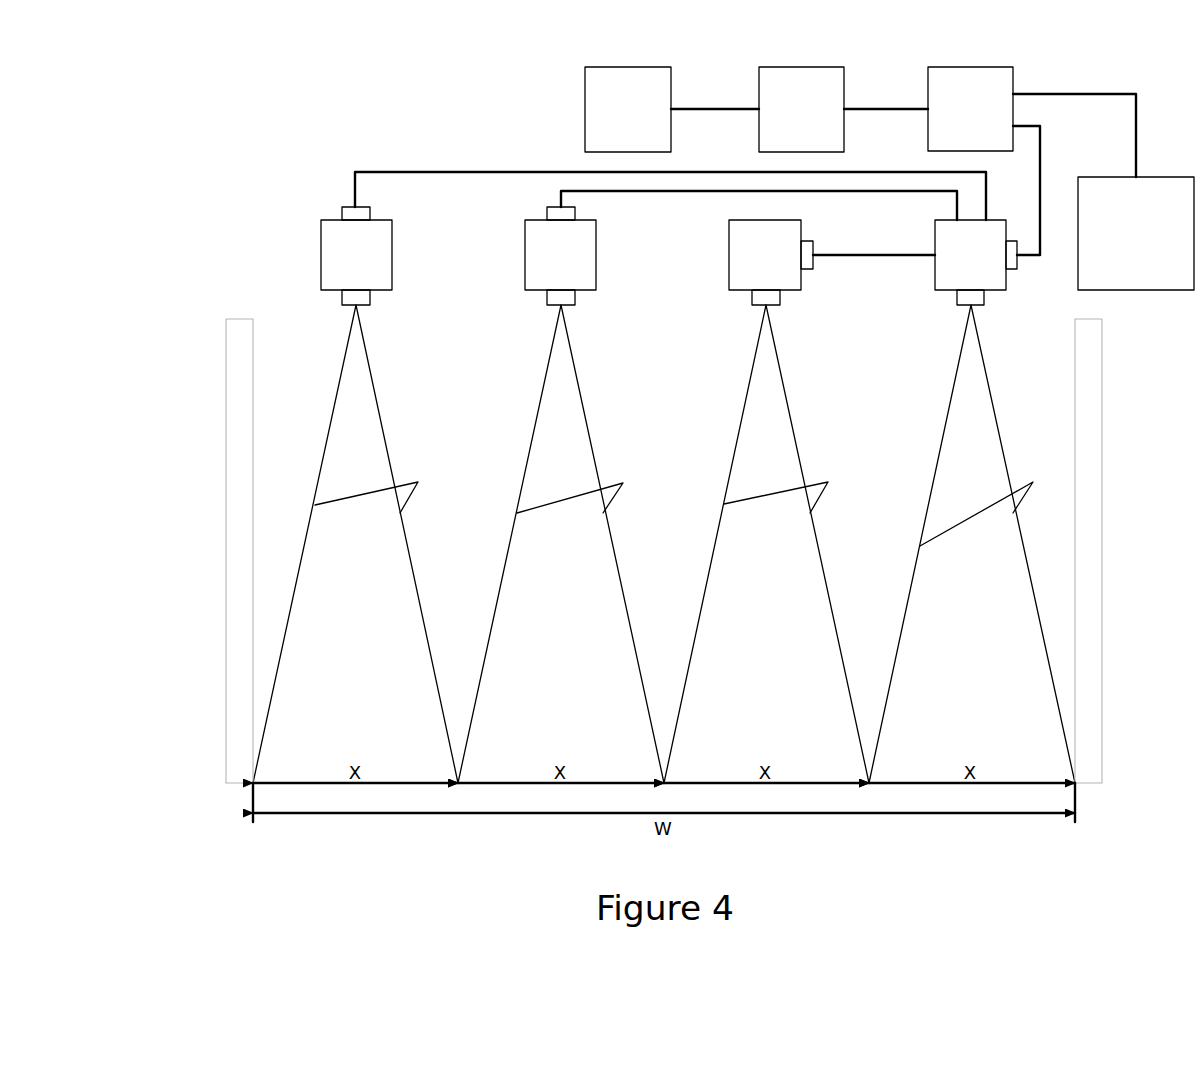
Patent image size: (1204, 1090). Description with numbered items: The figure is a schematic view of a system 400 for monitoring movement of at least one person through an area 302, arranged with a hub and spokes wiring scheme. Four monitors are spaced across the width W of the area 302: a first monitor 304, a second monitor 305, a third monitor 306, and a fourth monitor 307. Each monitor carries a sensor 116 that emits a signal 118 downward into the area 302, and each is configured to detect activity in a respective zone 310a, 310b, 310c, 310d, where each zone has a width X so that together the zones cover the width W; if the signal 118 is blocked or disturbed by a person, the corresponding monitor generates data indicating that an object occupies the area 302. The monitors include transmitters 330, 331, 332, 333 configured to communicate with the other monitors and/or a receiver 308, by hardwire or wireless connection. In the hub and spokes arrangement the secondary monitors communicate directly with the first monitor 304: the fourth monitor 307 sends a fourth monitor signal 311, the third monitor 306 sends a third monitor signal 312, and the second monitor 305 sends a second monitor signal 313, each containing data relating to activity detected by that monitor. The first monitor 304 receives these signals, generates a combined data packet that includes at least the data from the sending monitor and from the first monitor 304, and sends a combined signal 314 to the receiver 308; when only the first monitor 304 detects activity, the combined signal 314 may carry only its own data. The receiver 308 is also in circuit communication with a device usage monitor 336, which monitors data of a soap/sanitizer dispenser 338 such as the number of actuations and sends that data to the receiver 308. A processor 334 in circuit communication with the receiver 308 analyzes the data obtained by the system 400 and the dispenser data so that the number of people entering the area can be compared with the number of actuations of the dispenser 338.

The system 400 is at (335, 108).
The soap/sanitizer dispenser 338 is at (637, 66).
The device usage monitor 336 is at (810, 66).
The receiver 308 is at (978, 66).
The processor 334 is at (1149, 290).
The combined signal 314 is at (1042, 198).
The fourth monitor signal 311 is at (468, 170).
The third monitor signal 312 is at (610, 192).
The second monitor signal 313 is at (880, 256).
The fourth monitor 307 is at (321, 250).
The third monitor 306 is at (525, 241).
The second monitor 305 is at (730, 241).
The first monitor 304 is at (933, 242).
The transmitter 330 is at (341, 207).
The transmitter 331 is at (546, 211).
The transmitter 332 is at (810, 271).
The transmitter 333 is at (1015, 272).
The sensor 116 is at (340, 297).
The signal 118 is at (687, 499).
The zone 310a is at (355, 544).
The zone 310b is at (561, 544).
The zone 310c is at (766, 544).
The zone 310d is at (972, 544).
The area 302 is at (225, 473).